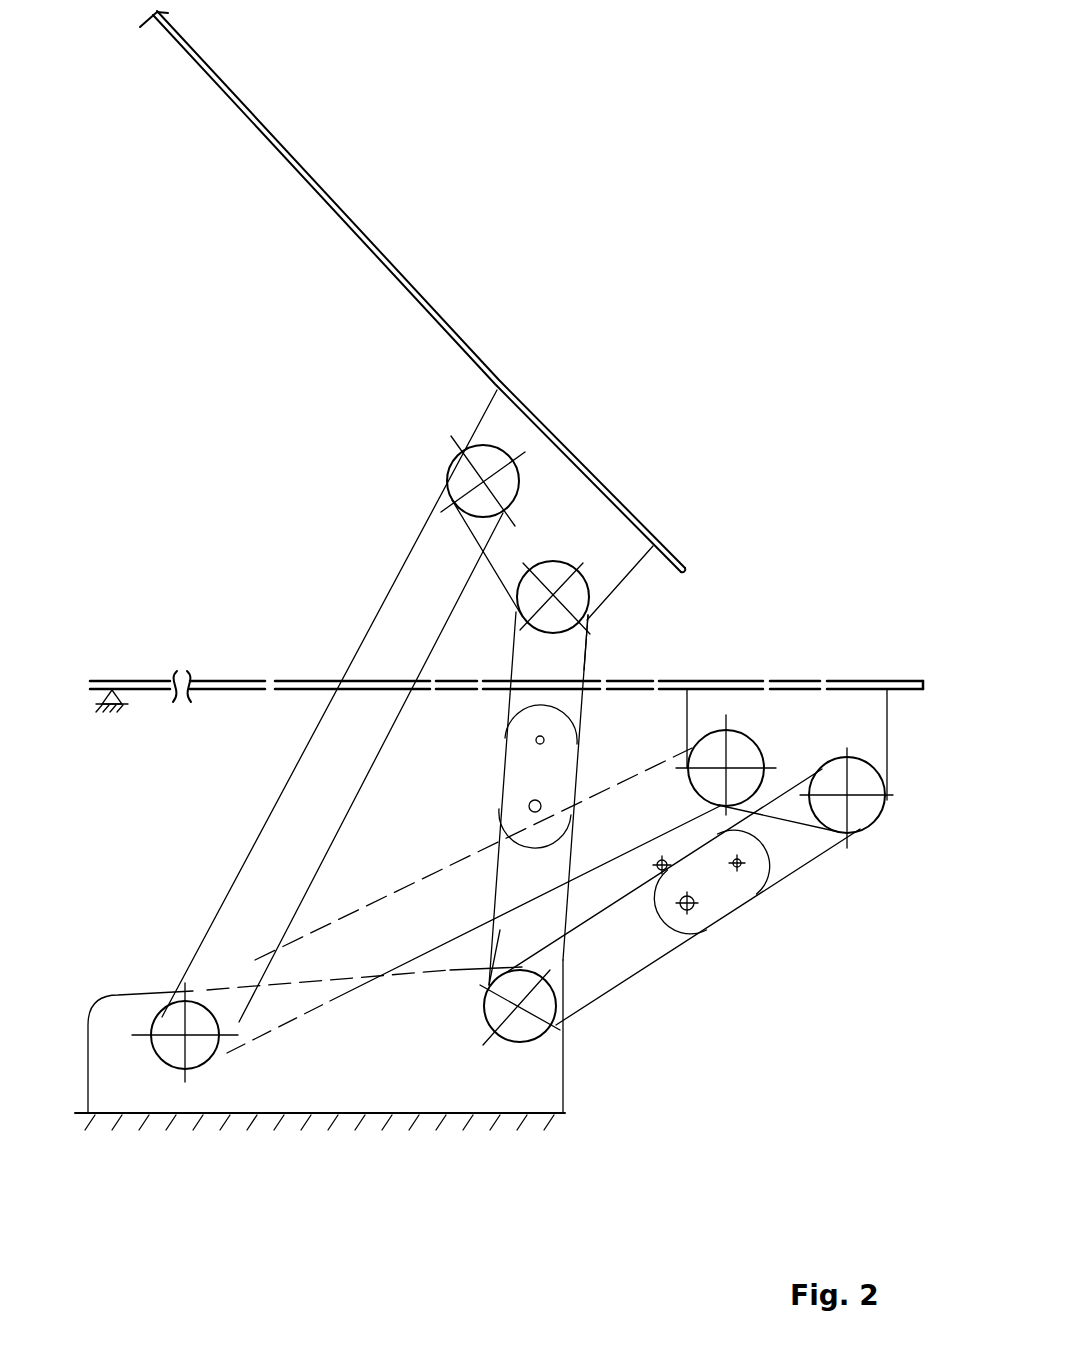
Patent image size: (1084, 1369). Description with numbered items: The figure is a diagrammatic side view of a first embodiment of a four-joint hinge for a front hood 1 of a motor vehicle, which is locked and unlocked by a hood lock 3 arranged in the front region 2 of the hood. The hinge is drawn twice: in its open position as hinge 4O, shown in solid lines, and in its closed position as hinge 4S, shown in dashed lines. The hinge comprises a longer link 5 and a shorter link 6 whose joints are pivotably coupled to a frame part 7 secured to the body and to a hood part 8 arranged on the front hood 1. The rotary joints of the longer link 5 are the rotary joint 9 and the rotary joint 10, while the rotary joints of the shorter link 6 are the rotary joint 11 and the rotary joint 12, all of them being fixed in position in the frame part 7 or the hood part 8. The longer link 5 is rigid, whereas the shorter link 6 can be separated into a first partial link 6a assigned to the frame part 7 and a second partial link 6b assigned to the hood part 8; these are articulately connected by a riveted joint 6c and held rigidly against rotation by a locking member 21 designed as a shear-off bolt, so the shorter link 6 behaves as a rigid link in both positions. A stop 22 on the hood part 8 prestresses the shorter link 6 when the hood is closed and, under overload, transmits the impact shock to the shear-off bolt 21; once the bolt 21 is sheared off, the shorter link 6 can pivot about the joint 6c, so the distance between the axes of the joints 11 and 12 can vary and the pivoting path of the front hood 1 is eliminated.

The front hood 1 is at (478, 350).
The front region 2 is at (143, 679).
The hood lock 3 is at (123, 706).
The four-joint hinge in open position 4O is at (370, 538).
The four-joint hinge in closed position 4S is at (711, 950).
The longer link 5 is at (300, 800).
The shorter link 6 is at (511, 718).
The first partial link 6a is at (495, 928).
The second partial link 6b is at (588, 657).
The joint 6c is at (528, 805).
The frame part 7 is at (386, 1074).
The hood part 8 is at (620, 543).
The rotary joint 9 is at (172, 1047).
The rotary joint 10 is at (487, 463).
The rotary joint 11 is at (520, 1027).
The rotary joint 12 is at (553, 566).
The locking member 21 is at (742, 867).
The stop 22 is at (657, 868).